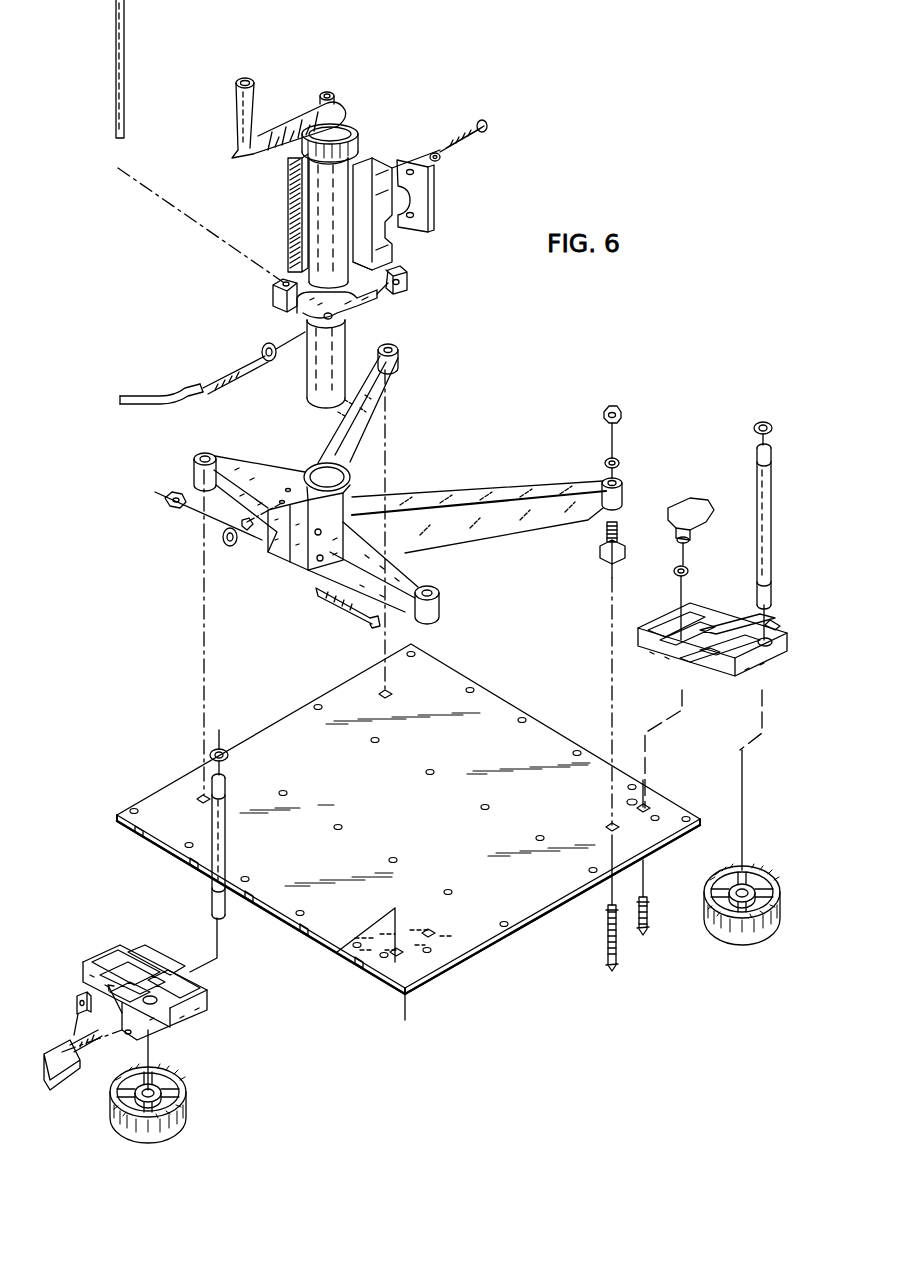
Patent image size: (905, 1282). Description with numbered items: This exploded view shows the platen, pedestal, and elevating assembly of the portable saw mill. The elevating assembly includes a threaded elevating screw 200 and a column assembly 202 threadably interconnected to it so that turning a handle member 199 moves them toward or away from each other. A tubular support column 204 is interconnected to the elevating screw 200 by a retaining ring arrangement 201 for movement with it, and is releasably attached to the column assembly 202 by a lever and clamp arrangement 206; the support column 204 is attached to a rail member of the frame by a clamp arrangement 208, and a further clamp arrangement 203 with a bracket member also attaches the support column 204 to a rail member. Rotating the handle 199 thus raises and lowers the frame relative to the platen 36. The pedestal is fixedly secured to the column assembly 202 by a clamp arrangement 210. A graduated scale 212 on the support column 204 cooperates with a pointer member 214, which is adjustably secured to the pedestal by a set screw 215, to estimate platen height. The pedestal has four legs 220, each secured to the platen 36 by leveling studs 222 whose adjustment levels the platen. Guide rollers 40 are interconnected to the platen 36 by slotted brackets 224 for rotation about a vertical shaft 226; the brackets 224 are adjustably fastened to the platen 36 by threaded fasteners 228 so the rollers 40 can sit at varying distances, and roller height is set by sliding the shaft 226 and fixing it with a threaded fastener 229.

The platen 36 is at (468, 935).
The guide rollers 40 is at (728, 945).
The handle member 199 is at (237, 104).
The threaded elevating screw 200 is at (302, 112).
The retaining ring arrangement 201 is at (358, 128).
The column assembly 202 is at (340, 348).
The clamp arrangement 203 is at (278, 273).
The tubular support column 204 is at (340, 172).
The lever and clamp arrangement 206 is at (228, 376).
The clamp arrangement 208 is at (392, 247).
The clamp arrangement 210 is at (310, 580).
The graduated scale 212 is at (288, 195).
The pointer member 214 is at (116, 100).
The set screw 215 is at (262, 525).
The legs 220 is at (378, 400).
The leveling studs 222 is at (601, 545).
The brackets 224 is at (748, 586).
The vertical shaft 226 is at (760, 538).
The threaded fasteners 228 is at (705, 482).
The threaded fastener 229 is at (74, 1035).